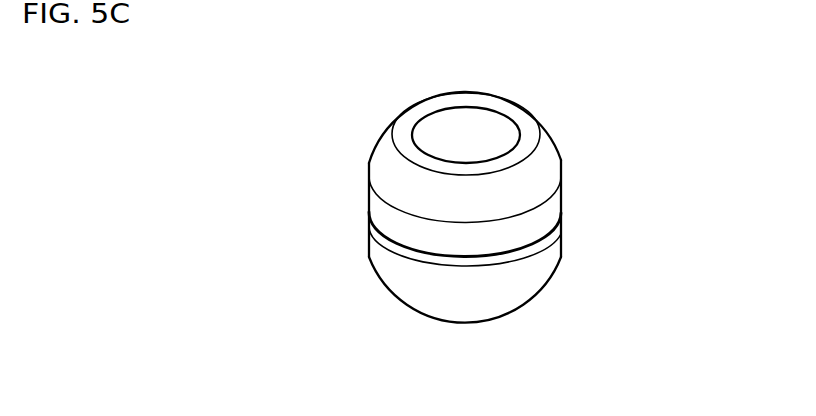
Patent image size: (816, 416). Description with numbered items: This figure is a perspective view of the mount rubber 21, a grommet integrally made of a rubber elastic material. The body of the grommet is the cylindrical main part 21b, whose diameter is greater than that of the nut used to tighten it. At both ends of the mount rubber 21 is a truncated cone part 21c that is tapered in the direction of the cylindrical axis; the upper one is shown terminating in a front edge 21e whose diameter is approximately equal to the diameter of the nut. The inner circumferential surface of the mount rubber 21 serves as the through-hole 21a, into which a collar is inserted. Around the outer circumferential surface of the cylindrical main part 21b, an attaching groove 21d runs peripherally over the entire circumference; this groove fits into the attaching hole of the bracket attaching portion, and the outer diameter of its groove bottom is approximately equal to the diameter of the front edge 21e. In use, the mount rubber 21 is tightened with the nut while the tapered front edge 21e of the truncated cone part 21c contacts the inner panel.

The mount rubber 21 is at (328, 243).
The through-hole 21a is at (432, 134).
The cylindrical main part 21b is at (552, 205).
The truncated cone part 21c is at (542, 160).
The attaching groove 21d is at (535, 246).
The front edge 21e is at (487, 100).